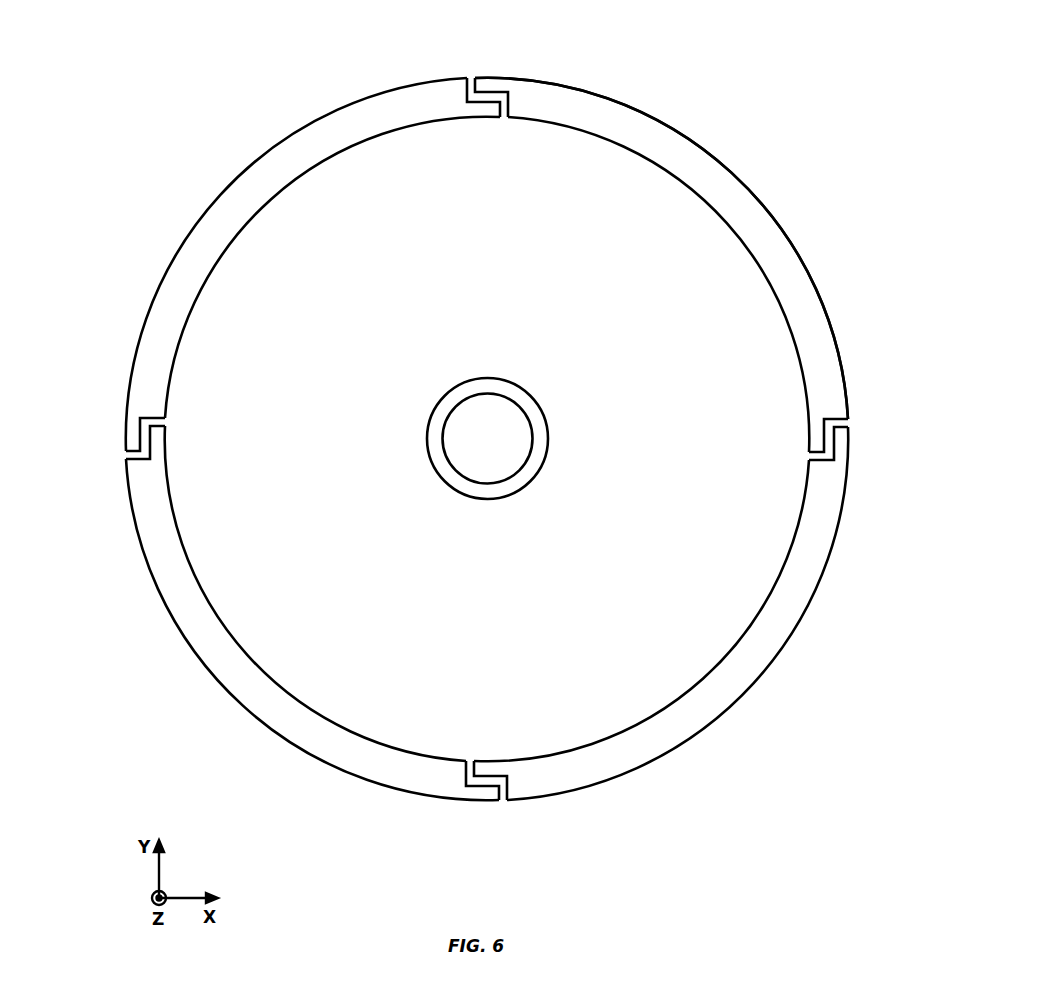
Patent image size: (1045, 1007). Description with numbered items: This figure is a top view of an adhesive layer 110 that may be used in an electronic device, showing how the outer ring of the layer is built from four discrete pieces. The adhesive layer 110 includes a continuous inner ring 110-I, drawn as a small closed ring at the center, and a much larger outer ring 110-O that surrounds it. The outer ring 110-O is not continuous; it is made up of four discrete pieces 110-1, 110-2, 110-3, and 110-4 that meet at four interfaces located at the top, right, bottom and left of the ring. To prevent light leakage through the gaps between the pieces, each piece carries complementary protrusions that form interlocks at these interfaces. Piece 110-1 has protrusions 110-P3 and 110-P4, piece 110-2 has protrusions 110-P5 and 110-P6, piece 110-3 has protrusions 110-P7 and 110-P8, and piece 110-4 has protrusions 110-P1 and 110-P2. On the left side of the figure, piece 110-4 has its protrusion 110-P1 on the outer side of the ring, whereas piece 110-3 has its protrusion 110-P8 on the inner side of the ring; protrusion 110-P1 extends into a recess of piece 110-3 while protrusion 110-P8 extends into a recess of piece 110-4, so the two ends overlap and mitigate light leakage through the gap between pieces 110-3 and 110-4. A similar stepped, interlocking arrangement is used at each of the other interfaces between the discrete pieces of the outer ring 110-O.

The adhesive layer 110 is at (216, 102).
The outer ring 110-O is at (640, 93).
The inner ring 110-I is at (510, 392).
The first discrete piece 110-1 is at (729, 190).
The second discrete piece 110-2 is at (773, 625).
The third discrete piece 110-3 is at (260, 698).
The fourth discrete piece 110-4 is at (190, 252).
The protrusion 110-P1 is at (127, 443).
The protrusion 110-P2 is at (486, 120).
The protrusion 110-P3 is at (468, 76).
The protrusion 110-P4 is at (814, 440).
The protrusion 110-P5 is at (849, 438).
The protrusion 110-P6 is at (489, 762).
The protrusion 110-P7 is at (487, 801).
The protrusion 110-P8 is at (156, 438).